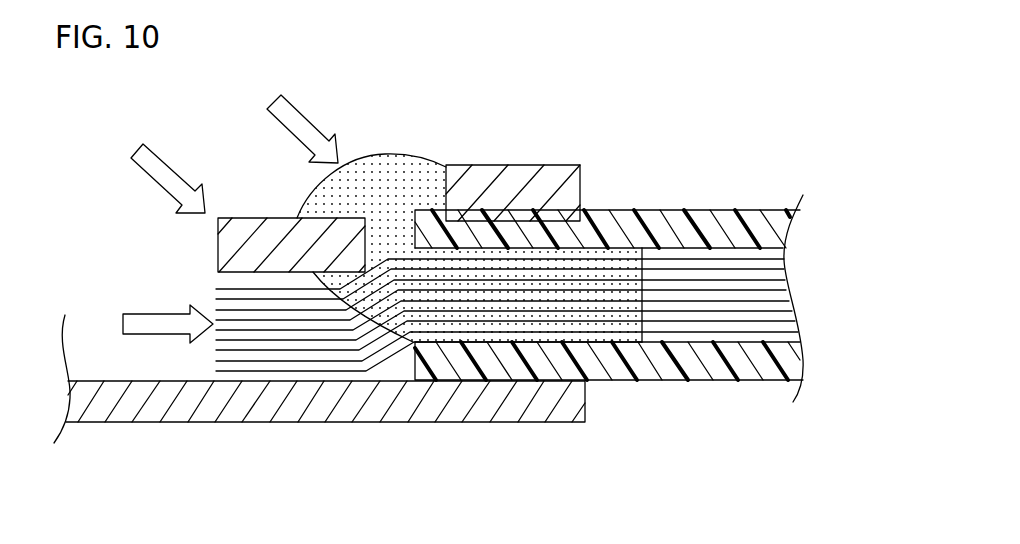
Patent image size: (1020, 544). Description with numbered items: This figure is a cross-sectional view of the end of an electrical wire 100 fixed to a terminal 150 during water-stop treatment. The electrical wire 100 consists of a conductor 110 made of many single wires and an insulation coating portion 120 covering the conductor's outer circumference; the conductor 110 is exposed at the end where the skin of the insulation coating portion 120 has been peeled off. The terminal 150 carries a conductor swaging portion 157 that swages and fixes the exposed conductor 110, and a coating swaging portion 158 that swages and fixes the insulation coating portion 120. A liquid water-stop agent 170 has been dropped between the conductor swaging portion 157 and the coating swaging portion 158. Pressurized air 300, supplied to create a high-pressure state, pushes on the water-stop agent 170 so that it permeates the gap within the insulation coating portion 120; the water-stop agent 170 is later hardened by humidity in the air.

The electrical wire 100 is at (697, 348).
The conductor 110 is at (328, 352).
The insulation coating portion 120 is at (655, 222).
The terminal 150 is at (222, 432).
The conductor swaging portion 157 is at (263, 216).
The coating swaging portion 158 is at (538, 175).
The water-stop agent 170 is at (398, 152).
The pressurized air 300 is at (300, 110).